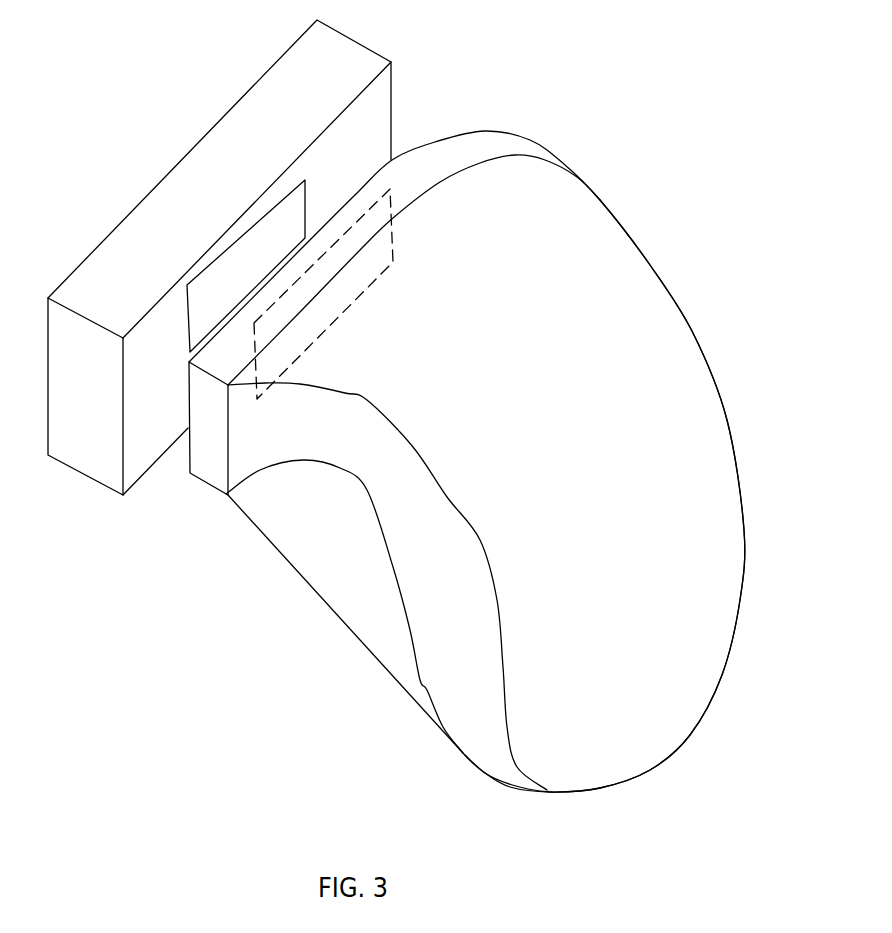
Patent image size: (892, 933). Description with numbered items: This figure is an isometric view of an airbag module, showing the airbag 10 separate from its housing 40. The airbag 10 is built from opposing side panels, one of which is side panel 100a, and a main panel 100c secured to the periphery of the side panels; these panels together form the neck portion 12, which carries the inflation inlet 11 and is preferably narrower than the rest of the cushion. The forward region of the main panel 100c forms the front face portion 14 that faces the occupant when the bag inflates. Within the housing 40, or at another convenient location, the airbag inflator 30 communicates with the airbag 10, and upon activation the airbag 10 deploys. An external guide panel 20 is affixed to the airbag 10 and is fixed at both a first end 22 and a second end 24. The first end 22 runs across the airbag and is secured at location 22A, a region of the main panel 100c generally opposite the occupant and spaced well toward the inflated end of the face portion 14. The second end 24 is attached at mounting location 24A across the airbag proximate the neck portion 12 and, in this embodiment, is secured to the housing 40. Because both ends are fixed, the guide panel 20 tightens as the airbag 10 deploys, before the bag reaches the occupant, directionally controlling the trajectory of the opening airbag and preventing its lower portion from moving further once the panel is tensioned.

The airbag 10 is at (672, 372).
The inflation inlet 11 is at (270, 366).
The neck portion 12 is at (407, 183).
The front face portion 14 is at (727, 570).
The external guide panel 20 is at (343, 626).
The first end 22 is at (437, 727).
The securing location 22A is at (450, 713).
The second end 24 is at (233, 503).
The mounting location 24A is at (237, 477).
The airbag inflator 30 is at (210, 297).
The housing 40 is at (260, 138).
The side panel 100a is at (455, 597).
The main panel 100c is at (587, 520).